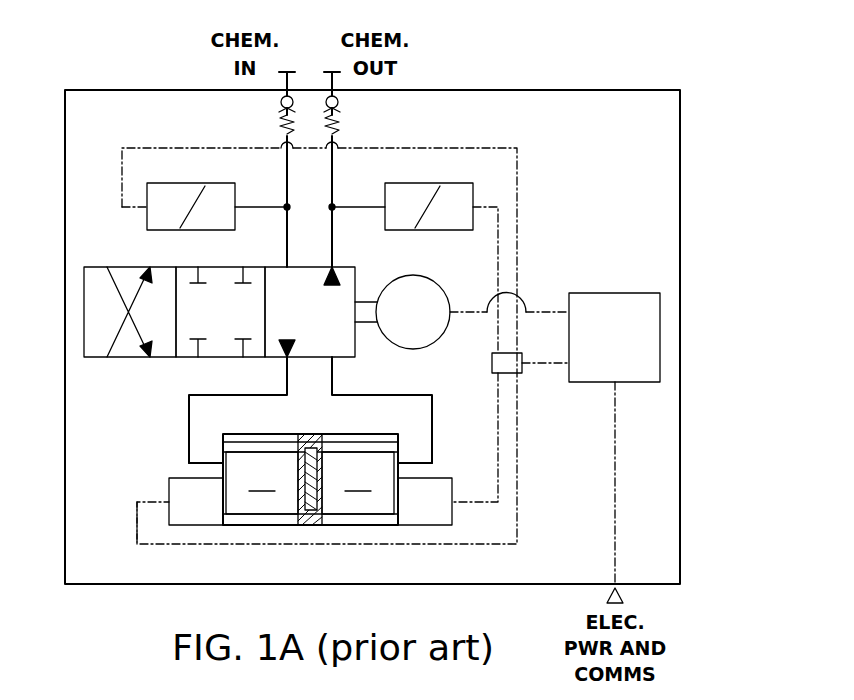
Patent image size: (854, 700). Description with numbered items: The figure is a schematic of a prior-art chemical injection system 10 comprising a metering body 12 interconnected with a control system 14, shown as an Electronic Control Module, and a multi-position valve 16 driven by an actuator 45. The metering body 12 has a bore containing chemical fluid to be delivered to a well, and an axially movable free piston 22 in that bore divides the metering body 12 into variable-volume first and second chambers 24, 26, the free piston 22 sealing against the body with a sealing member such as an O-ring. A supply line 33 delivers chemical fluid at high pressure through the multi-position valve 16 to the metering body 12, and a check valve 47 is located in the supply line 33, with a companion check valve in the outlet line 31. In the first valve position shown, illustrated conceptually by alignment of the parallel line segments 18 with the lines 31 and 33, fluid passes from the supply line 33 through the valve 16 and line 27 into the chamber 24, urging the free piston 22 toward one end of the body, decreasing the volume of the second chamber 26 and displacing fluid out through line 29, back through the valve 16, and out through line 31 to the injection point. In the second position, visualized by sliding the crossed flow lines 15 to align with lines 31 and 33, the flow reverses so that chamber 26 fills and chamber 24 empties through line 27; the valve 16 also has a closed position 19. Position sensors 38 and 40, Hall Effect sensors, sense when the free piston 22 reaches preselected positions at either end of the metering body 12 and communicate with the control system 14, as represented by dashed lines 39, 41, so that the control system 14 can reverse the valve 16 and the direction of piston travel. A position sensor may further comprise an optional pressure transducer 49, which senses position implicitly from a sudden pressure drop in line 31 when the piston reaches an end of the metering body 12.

The chemical injection system 10 is at (681, 117).
The metering body 12 is at (354, 434).
The control system 14 is at (613, 293).
The crossed flow lines 15 is at (131, 351).
The multi-position valve 16 is at (343, 268).
The parallel line segments 18 is at (340, 348).
The closed position 19 is at (218, 351).
The free piston 22 is at (298, 463).
The first chamber 24 is at (262, 483).
The second chamber 26 is at (358, 483).
The line 27 is at (188, 452).
The line 29 is at (434, 430).
The line 31 is at (330, 198).
The supply line 33 is at (289, 250).
The position sensor 38 is at (183, 478).
The dashed line 39 is at (135, 529).
The position sensor 40 is at (440, 478).
The dashed line 41 is at (495, 386).
The actuator 45 is at (427, 345).
The check valve 47 is at (278, 120).
The pressure transducer 49 is at (405, 232).